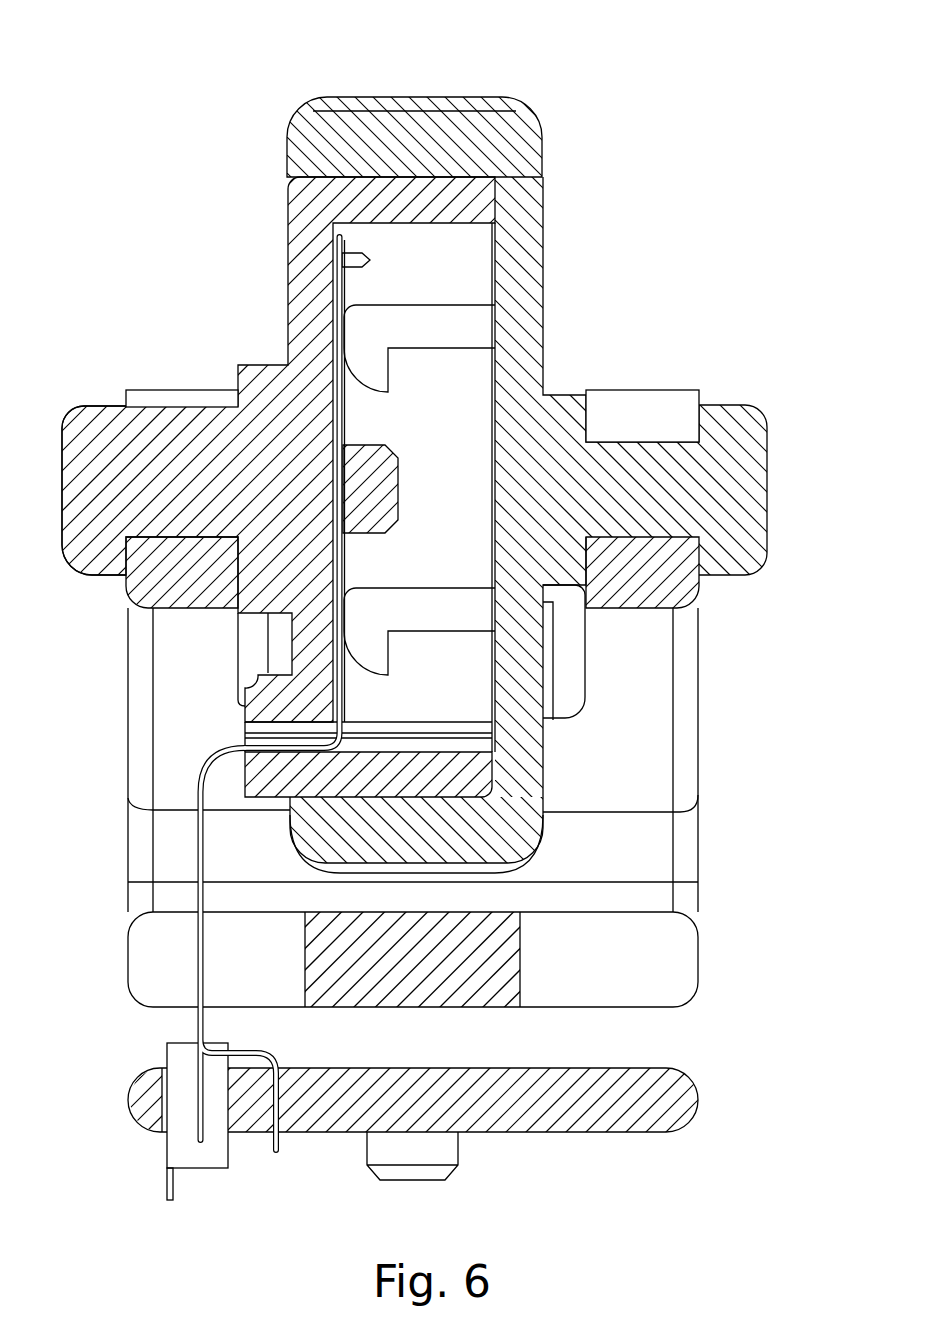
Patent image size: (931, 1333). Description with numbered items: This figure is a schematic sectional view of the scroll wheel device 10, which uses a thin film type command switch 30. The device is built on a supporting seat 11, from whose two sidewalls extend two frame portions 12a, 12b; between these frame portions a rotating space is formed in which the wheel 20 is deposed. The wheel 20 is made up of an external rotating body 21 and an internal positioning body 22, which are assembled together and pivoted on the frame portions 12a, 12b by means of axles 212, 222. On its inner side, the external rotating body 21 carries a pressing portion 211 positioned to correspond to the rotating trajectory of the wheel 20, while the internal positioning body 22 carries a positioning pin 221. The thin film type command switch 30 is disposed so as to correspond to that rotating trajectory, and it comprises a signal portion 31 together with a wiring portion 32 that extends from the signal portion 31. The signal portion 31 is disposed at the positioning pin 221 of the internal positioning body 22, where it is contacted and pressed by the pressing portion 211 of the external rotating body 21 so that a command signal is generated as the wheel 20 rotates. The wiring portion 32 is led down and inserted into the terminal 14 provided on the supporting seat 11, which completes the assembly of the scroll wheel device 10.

The scroll wheel device 10 is at (771, 93).
The supporting seat 11 is at (648, 837).
The frame portion 12a is at (172, 585).
The frame portion 12b is at (640, 580).
The terminal 14 is at (178, 1147).
The wheel 20 is at (547, 151).
The external rotating body 21 is at (465, 666).
The pressing portion 211 is at (373, 617).
The axle 212 is at (730, 500).
The internal positioning body 22 is at (322, 278).
The positioning pin 221 is at (350, 249).
The axle 222 is at (100, 448).
The thin film type command switch 30 is at (348, 302).
The signal portion 31 is at (341, 421).
The wiring portion 32 is at (197, 857).